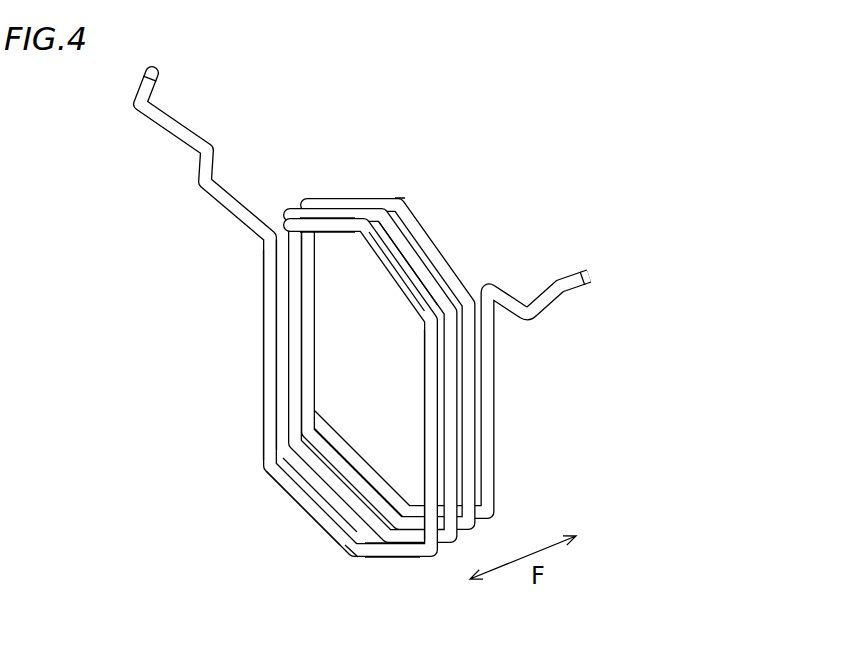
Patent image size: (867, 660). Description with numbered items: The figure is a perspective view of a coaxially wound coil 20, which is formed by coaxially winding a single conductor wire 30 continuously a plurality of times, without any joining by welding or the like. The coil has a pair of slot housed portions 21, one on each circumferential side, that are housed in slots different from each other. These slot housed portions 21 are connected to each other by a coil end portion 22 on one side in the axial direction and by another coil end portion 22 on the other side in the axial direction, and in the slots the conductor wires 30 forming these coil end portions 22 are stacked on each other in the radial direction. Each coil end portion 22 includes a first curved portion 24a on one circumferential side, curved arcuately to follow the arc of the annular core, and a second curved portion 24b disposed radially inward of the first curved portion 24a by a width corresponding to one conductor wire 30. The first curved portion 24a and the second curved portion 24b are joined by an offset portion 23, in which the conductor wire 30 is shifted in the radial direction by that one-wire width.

The coaxially wound coil 20 is at (452, 353).
The slot housed portion 21 is at (272, 367).
The coil end portion 22 is at (351, 203).
The offset portion 23 is at (400, 199).
The first curved portion 24a is at (315, 214).
The second curved portion 24b is at (420, 258).
The conductor wire 30 is at (182, 131).